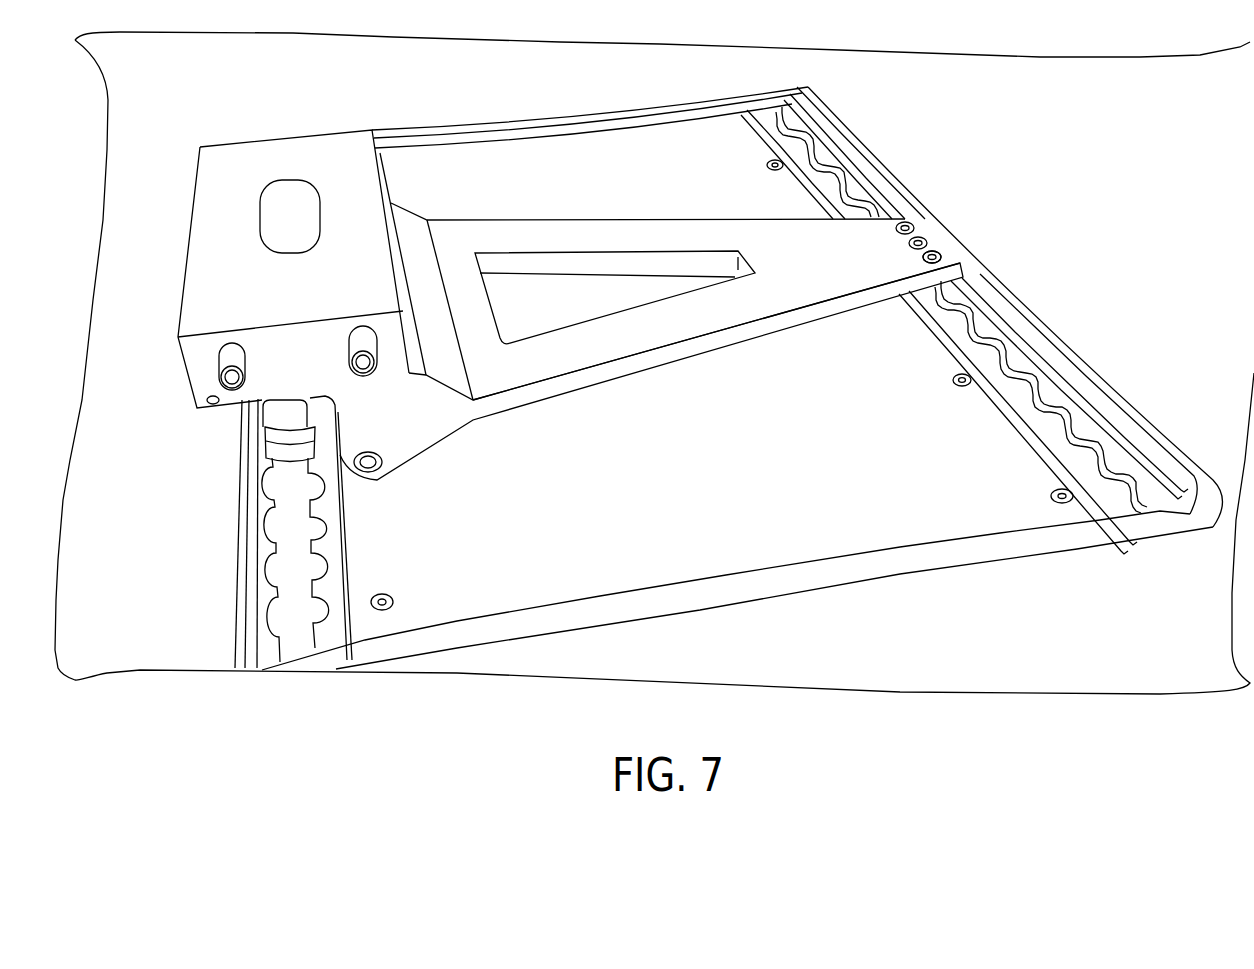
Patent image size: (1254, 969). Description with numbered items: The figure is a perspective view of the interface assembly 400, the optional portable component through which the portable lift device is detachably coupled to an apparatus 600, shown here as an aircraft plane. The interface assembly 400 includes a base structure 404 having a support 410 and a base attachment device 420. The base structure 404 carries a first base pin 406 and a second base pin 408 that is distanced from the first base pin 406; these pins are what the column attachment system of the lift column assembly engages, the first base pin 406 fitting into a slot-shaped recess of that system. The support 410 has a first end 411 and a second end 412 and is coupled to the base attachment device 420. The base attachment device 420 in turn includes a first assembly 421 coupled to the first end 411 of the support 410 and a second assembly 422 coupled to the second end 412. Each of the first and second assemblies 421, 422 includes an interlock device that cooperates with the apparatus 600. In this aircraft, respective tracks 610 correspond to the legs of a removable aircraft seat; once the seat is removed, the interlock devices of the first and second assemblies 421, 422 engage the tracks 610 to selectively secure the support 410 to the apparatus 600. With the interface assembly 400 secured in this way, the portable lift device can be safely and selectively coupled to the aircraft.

The interface assembly 400 is at (467, 213).
The base structure 404 is at (367, 122).
The first base pin 406 is at (360, 330).
The second base pin 408 is at (232, 345).
The support 410 is at (625, 345).
The first end 411 is at (205, 408).
The second end 412 is at (933, 265).
The base attachment device 420 is at (997, 257).
The first assembly 421 is at (293, 448).
The second assembly 422 is at (927, 245).
The apparatus 600 is at (680, 180).
The tracks 610 is at (323, 615).